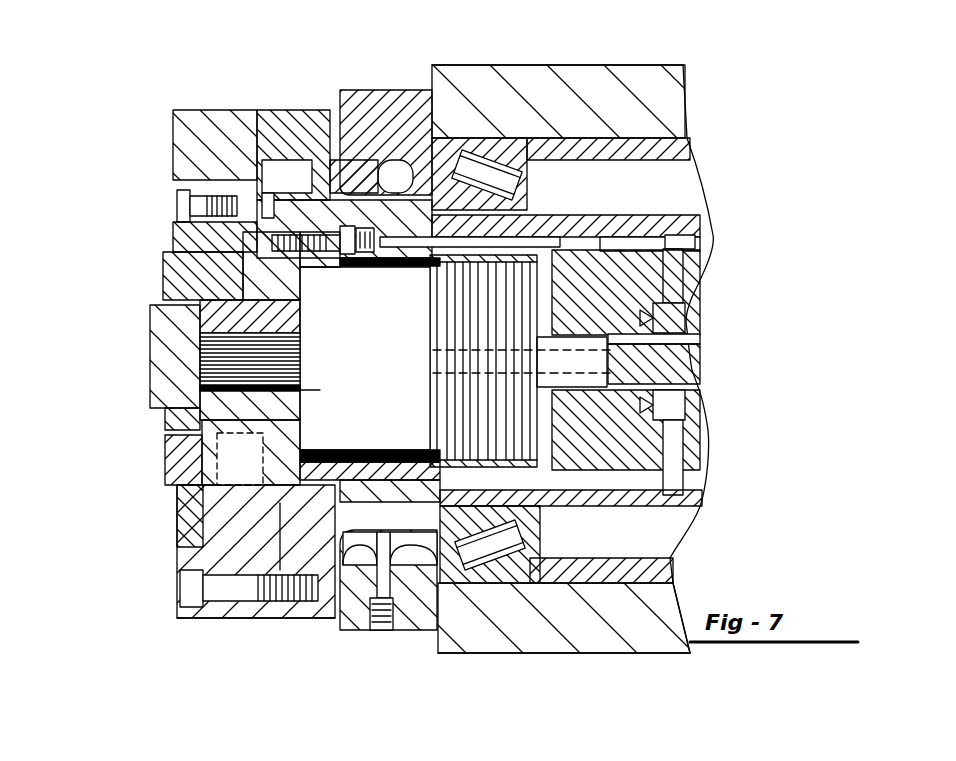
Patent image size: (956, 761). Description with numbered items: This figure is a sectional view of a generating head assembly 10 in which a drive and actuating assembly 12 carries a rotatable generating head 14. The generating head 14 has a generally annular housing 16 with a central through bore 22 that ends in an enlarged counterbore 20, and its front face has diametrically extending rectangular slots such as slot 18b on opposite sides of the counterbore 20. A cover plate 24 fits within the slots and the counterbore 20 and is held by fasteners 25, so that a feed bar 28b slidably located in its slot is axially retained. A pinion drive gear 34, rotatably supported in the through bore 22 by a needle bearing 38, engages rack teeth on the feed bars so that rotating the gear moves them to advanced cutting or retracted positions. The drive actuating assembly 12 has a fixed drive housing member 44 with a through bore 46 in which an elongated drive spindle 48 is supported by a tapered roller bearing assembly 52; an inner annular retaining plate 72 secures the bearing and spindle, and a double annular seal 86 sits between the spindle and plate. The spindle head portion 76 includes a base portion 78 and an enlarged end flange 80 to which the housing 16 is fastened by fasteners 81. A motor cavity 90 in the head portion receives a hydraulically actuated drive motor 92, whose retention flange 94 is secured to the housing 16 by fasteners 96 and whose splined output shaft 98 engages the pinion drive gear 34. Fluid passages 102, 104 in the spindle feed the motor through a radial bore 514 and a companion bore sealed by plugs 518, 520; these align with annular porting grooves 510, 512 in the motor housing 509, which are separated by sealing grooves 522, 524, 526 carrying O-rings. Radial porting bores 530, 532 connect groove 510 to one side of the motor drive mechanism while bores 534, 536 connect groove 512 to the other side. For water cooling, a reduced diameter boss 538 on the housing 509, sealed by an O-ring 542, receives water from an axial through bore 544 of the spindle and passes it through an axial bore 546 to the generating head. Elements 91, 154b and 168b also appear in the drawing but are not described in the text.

The generating head assembly 10 is at (712, 44).
The drive and actuating assembly 12 is at (645, 662).
The rotatable generating head 14 is at (178, 662).
The annular housing 16 is at (215, 115).
The rectangular slot 18b is at (228, 485).
The counterbore 20 is at (150, 345).
The through bore 22 is at (265, 290).
The cover plate 24 is at (180, 525).
The fasteners 25 is at (177, 202).
The feed bar 28b is at (180, 465).
The pinion drive gear 34 is at (165, 416).
The needle bearing 38 is at (430, 432).
The fixed drive housing member 44 is at (542, 640).
The through bore 46 is at (640, 578).
The drive spindle 48 is at (632, 228).
The tapered roller bearing assembly 52 is at (535, 150).
The inner annular retaining plate 72 is at (352, 90).
The head portion 76 is at (305, 630).
The base portion 78 is at (265, 178).
The enlarged end flange 80 is at (307, 120).
The fasteners 81 is at (190, 588).
The double annular seal 86 is at (435, 175).
The motor cavity 90 is at (580, 232).
The screw 91 is at (380, 633).
The hydraulically actuated drive motor 92 is at (285, 360).
The retention flange 94 is at (290, 232).
The fasteners 96 is at (392, 165).
The splined output shaft 98 is at (315, 390).
The fluid passage 102 is at (688, 310).
The fluid passage 104 is at (690, 408).
The seal 154b is at (268, 193).
The fastener 168b is at (364, 228).
The motor housing 509 is at (255, 295).
The annular fluid channel 510 is at (682, 250).
The annular fluid channel 512 is at (470, 325).
The radial bore 514 is at (525, 250).
The sealing plug 518 is at (487, 160).
The sealing plug 520 is at (520, 518).
The annular sealing groove 522 is at (430, 280).
The annular sealing groove 524 is at (525, 420).
The annular sealing groove 526 is at (535, 280).
The radial porting bore 530 is at (698, 240).
The radial porting bore 532 is at (680, 462).
The radial porting bore 534 is at (447, 300).
The radial porting bore 536 is at (430, 440).
The reduced diameter boss 538 is at (640, 355).
The annular groove and O-ring 542 is at (660, 340).
The axial through bore 544 is at (670, 380).
The axial bore 546 is at (445, 370).